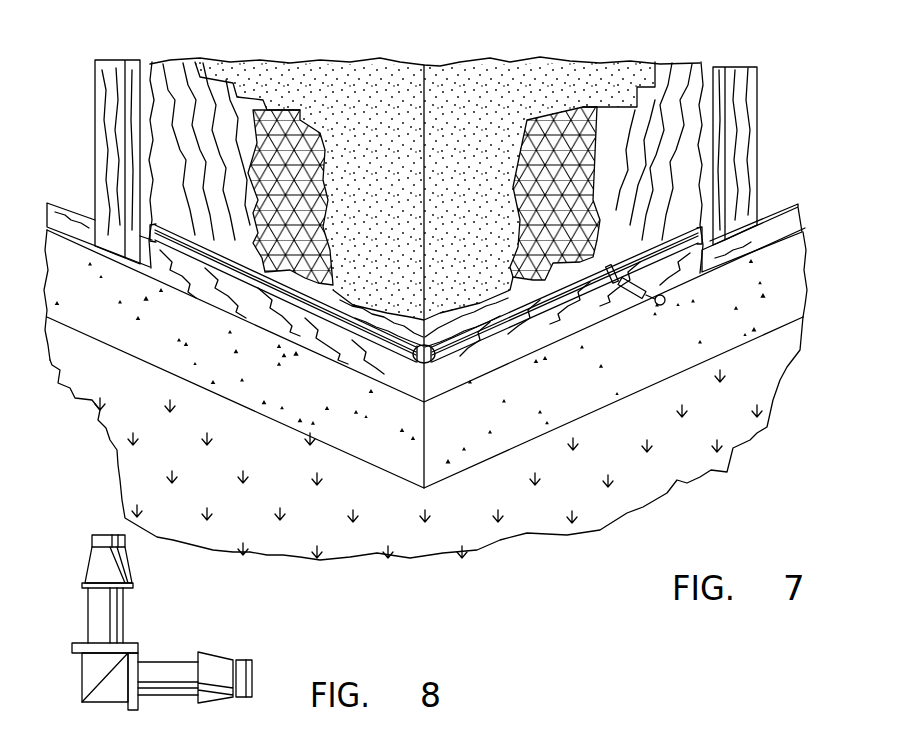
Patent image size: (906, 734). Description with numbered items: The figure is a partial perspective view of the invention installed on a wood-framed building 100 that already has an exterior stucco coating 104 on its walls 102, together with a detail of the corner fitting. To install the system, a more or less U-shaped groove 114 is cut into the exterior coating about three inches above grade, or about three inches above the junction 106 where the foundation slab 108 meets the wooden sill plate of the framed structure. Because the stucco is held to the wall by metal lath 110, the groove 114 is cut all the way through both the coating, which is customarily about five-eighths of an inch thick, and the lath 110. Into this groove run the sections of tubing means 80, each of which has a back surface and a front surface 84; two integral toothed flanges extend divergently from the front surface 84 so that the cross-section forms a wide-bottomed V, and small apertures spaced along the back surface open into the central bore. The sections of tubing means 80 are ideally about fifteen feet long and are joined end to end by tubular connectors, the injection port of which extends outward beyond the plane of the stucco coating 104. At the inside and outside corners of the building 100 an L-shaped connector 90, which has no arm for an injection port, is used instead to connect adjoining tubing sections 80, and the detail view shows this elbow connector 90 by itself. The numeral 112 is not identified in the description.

In FIG. 7, the tubing means 80 is at (253, 283).
In FIG. 7, the front surface 84 is at (373, 333).
In FIG. 7, the L-shaped connector 90 is at (432, 362).
In FIG. 8, the L-shaped connector 90 is at (137, 647).
In FIG. 7, the building 100 is at (493, 110).
In FIG. 7, the walls 102 is at (347, 123).
In FIG. 7, the exterior stucco coating 104 is at (648, 110).
In FIG. 7, the junction 106 is at (810, 233).
In FIG. 7, the foundation slab 108 is at (663, 348).
In FIG. 7, the metal lath 110 is at (563, 203).
In FIG. 7, the stud 112 is at (110, 242).
In FIG. 7, the groove 114 is at (147, 235).